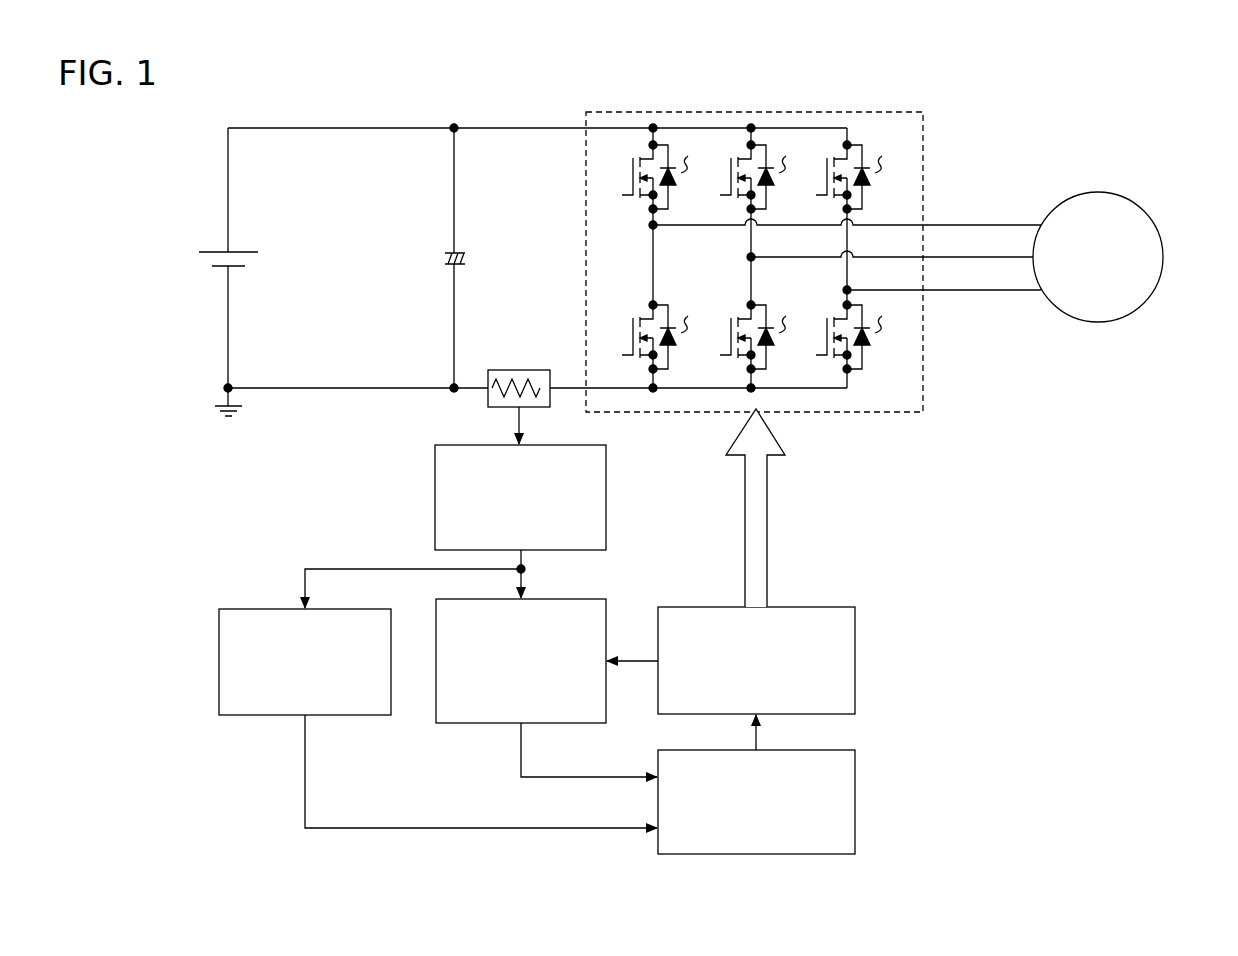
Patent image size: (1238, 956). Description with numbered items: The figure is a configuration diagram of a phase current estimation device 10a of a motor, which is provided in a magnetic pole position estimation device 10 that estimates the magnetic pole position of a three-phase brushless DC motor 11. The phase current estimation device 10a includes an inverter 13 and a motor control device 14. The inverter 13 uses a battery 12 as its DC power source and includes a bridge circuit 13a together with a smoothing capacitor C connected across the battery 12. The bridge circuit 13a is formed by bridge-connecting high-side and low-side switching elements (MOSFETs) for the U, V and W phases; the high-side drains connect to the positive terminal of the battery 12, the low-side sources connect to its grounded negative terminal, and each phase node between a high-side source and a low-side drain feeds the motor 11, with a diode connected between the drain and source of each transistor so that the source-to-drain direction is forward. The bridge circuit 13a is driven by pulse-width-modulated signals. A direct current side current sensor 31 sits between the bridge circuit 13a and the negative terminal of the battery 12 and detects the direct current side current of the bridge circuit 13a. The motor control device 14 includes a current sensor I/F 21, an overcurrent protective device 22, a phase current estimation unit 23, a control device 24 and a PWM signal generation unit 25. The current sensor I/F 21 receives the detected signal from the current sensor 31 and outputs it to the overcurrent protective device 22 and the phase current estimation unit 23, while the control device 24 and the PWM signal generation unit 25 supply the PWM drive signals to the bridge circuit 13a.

The magnetic pole position estimation device 10 is at (1158, 166).
The phase current estimation device 10a is at (1023, 148).
The motor 11 is at (1163, 257).
The battery 12 is at (212, 251).
The inverter 13 is at (566, 116).
The bridge circuit 13a is at (930, 153).
The motor control device 14 is at (211, 556).
The current sensor I/F 21 is at (606, 477).
The overcurrent protective device 22 is at (348, 718).
The phase current estimation unit 23 is at (470, 725).
The control device 24 is at (857, 777).
The PWM signal generation unit 25 is at (826, 606).
The direct current side current sensor 31 is at (507, 370).
The smoothing capacitor C is at (445, 254).